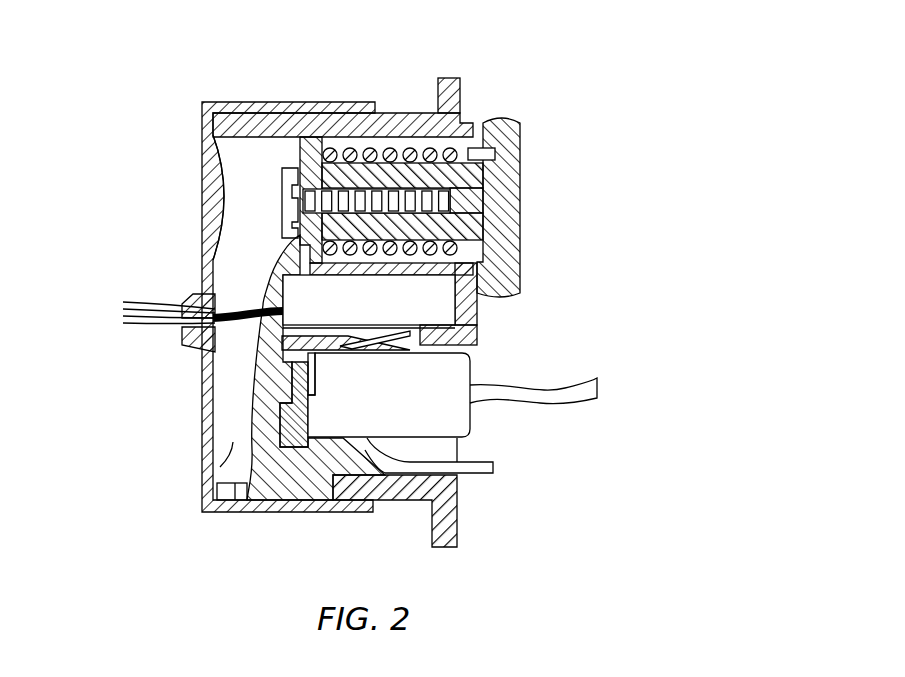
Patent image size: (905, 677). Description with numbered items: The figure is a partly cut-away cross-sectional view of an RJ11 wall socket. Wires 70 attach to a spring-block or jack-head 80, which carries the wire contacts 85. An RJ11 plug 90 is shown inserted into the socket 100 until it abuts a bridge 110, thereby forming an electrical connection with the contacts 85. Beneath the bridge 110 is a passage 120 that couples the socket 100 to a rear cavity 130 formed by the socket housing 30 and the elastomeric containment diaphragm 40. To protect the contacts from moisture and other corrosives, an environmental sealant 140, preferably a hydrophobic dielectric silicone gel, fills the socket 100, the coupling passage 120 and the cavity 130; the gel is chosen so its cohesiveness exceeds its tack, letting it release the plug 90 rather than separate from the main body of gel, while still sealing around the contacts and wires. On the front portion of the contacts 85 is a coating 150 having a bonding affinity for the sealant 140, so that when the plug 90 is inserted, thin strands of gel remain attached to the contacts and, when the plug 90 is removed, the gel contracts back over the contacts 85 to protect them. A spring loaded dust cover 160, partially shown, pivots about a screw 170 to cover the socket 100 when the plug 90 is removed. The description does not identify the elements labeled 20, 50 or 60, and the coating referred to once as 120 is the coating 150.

The mounting tab 20 is at (460, 92).
The socket housing 30 is at (410, 113).
The elastomeric containment diaphragm 40 is at (202, 430).
The housing wall bulge 50 is at (205, 198).
The grommet 60 is at (187, 347).
The wires 70 is at (137, 305).
The spring-block (jack-head) 80 is at (443, 313).
The wire contacts 85 is at (473, 321).
The RJ11 plug 90 is at (467, 413).
The socket 100 is at (443, 447).
The bridge 110 is at (300, 430).
The passage 120 is at (333, 490).
The rear cavity 130 is at (220, 467).
The environmental sealant 140 is at (258, 510).
The coating 150 is at (380, 347).
The spring loaded dust cover 160 is at (520, 145).
The screw 170 is at (448, 200).